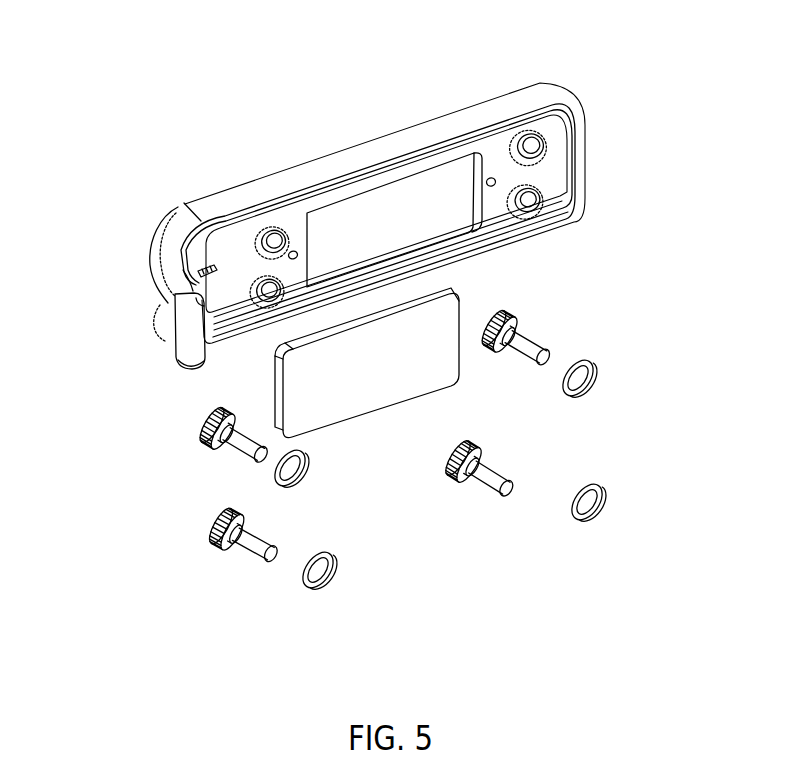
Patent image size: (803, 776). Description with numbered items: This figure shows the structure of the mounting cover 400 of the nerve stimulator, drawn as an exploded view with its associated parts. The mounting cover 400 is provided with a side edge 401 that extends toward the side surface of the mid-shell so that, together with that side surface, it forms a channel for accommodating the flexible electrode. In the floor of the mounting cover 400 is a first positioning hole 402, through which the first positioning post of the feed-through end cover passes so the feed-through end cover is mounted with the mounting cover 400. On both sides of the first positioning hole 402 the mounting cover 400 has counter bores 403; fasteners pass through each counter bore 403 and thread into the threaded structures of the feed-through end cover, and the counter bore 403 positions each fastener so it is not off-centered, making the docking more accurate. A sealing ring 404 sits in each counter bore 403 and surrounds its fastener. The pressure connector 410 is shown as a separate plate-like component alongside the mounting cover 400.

The mounting cover 400 is at (442, 172).
The side edge 401 is at (183, 313).
The first positioning hole 402 is at (492, 188).
The counter bore 403 is at (529, 158).
The sealing ring 404 is at (587, 373).
The pressure connector 410 is at (297, 363).